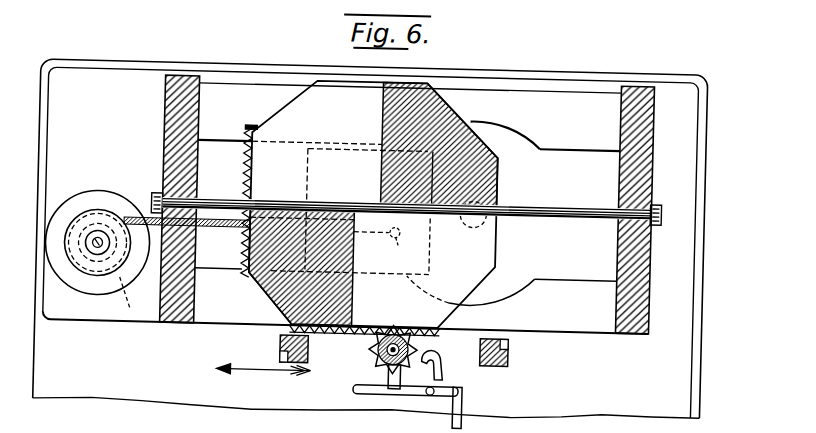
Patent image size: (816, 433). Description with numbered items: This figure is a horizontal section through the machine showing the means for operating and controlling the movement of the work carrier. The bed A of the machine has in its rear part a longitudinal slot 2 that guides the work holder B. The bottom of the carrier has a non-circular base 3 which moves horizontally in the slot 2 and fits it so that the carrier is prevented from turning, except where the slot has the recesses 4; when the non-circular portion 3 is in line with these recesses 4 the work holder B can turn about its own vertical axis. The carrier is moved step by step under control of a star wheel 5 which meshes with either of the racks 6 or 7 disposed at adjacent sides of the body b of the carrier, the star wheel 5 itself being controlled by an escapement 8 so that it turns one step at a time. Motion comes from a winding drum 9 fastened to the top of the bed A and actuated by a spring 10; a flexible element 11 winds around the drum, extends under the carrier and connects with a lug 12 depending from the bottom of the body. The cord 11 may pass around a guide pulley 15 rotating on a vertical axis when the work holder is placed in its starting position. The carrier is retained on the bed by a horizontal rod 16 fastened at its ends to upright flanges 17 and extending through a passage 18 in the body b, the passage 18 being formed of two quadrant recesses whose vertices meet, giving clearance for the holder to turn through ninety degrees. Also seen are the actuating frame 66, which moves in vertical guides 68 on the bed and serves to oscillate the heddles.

The bed A is at (370, 240).
The work holder B is at (474, 113).
The longitudinal slot 2 is at (577, 268).
The non-circular base 3 is at (436, 232).
The recesses 4 is at (498, 292).
The star wheel 5 is at (384, 355).
The rack 6 is at (247, 184).
The body b is at (278, 291).
The rack 7 is at (366, 316).
The escapement 8 is at (451, 368).
The winding drum 9 is at (106, 210).
The spring 10 is at (117, 279).
The flexible element 11 is at (147, 209).
The lug 12 is at (376, 247).
The pulley 15 is at (406, 221).
The horizontal rod 16 is at (576, 206).
The upright flanges 17 is at (166, 122).
The passage 18 is at (518, 189).
The actuating frame 66 is at (491, 357).
The vertical guides 68 is at (516, 346).